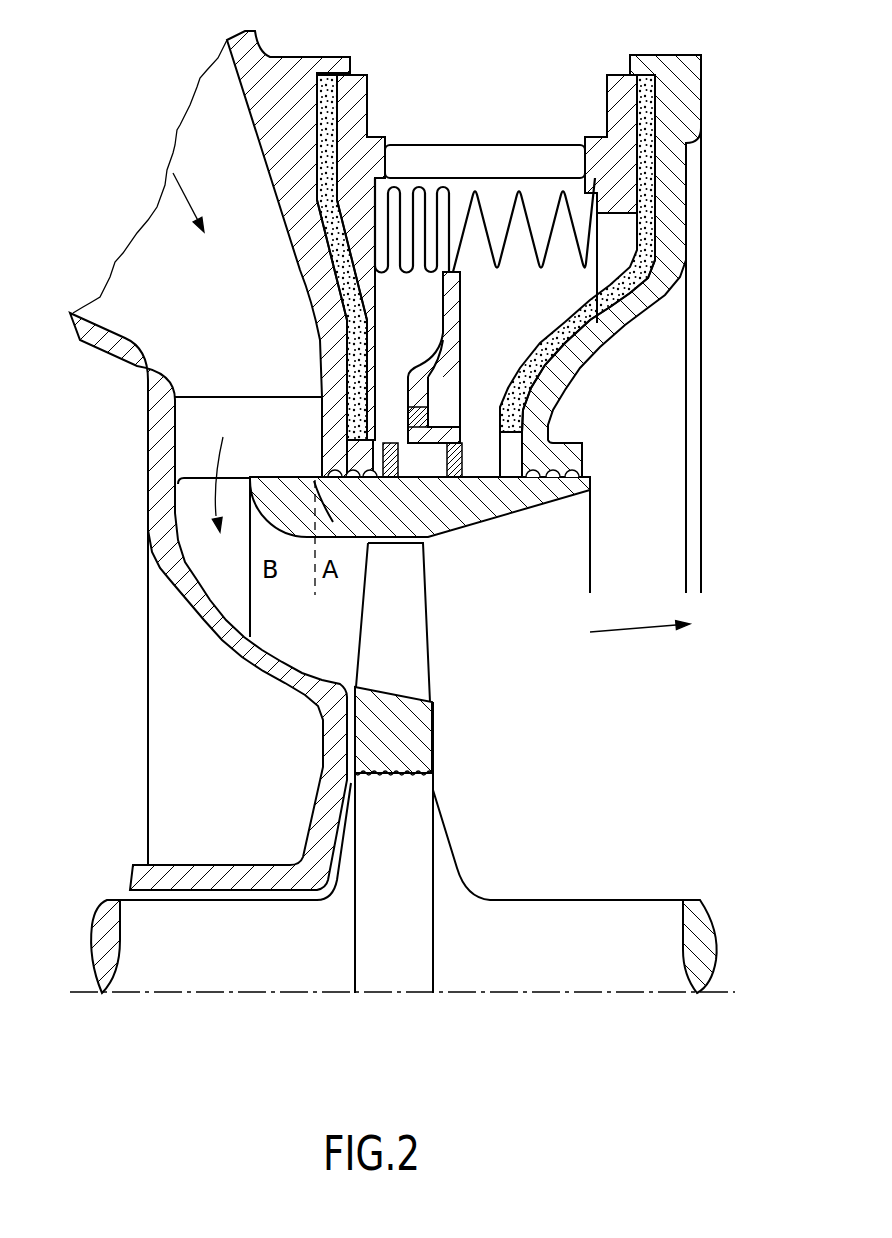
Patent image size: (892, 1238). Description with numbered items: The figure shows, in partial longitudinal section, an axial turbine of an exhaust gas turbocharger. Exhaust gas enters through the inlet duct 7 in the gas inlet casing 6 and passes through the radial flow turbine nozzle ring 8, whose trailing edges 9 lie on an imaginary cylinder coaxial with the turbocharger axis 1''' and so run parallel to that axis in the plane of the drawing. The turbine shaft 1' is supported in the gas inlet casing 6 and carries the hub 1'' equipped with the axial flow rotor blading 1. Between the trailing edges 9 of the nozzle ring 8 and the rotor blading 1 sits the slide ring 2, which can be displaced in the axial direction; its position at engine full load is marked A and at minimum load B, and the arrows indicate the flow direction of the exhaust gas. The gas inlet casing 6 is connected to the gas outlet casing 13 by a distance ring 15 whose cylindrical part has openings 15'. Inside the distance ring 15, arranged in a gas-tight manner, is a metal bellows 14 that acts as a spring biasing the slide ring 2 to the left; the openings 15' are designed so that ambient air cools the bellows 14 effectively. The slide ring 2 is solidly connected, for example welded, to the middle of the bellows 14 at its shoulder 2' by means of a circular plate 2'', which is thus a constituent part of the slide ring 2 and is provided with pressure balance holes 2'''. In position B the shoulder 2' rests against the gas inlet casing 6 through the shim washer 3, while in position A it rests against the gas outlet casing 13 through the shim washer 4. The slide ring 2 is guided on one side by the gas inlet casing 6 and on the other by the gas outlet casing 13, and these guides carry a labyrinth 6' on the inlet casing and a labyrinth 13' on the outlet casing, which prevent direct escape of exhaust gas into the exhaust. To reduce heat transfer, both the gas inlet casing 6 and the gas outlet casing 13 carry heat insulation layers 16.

The rotor blading 1 is at (434, 622).
The turbine shaft 1' is at (223, 918).
The hub 1'' is at (440, 731).
The turbocharger axis 1''' is at (575, 883).
The slide ring 2 is at (420, 535).
The shoulder 2' is at (394, 420).
The circular plate 2'' is at (427, 357).
The pressure balance holes 2''' is at (456, 395).
The shim washer 3 is at (358, 447).
The shim washer 4 is at (463, 455).
The gas inlet casing 6 is at (209, 450).
The labyrinth 6' is at (330, 460).
The inlet duct 7 is at (173, 230).
The turbine nozzle ring 8 is at (217, 408).
The trailing edges 9 is at (198, 478).
The gas outlet casing 13 is at (636, 324).
The labyrinth 13' is at (640, 452).
The metal bellows 14 is at (517, 187).
The distance ring 15 is at (487, 251).
The openings 15' is at (485, 120).
The heat insulation layers 16 is at (360, 343).